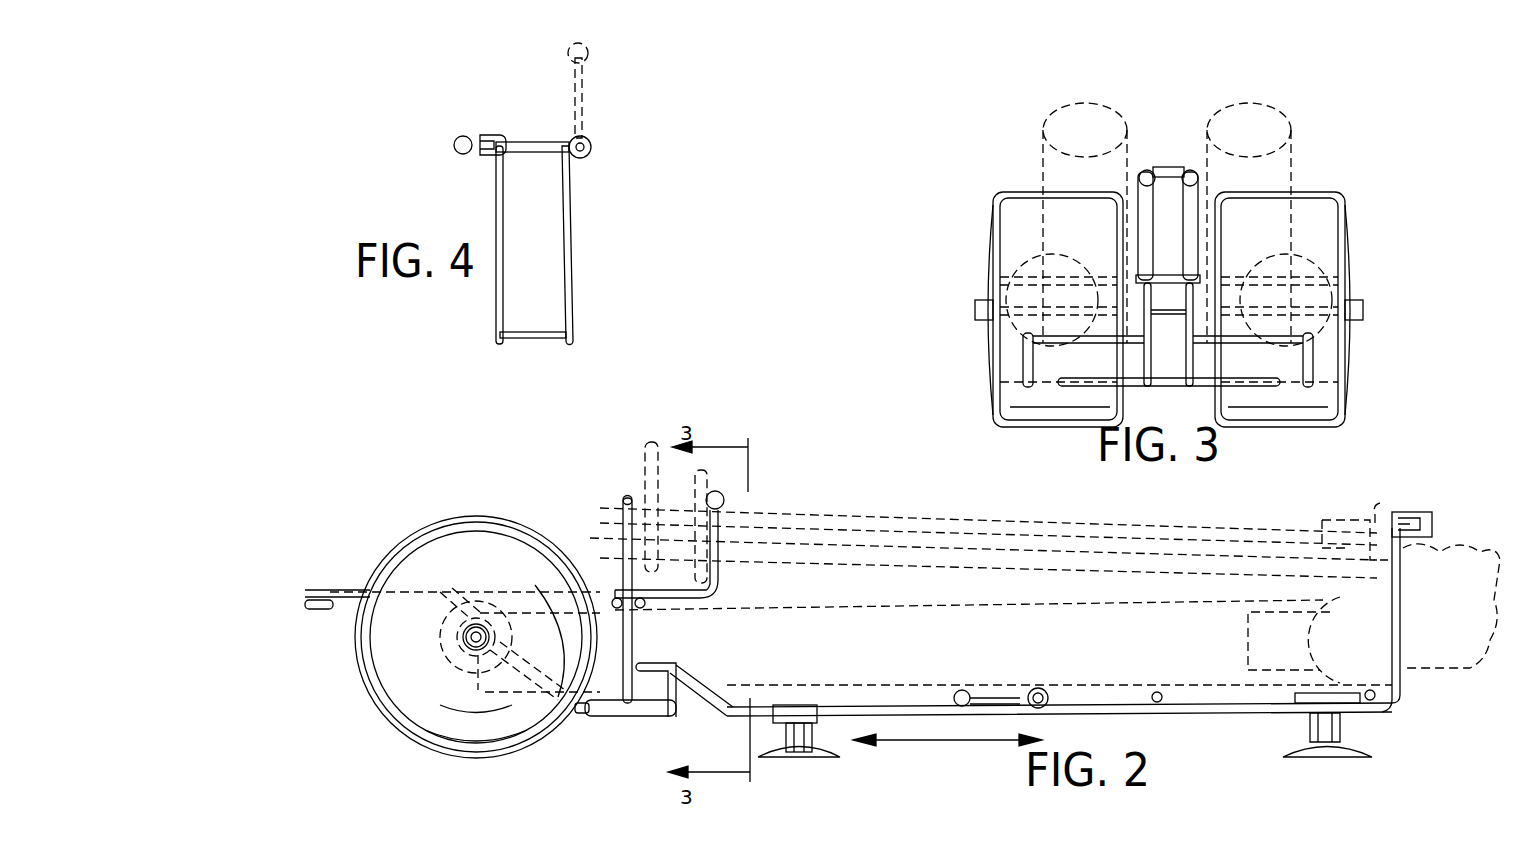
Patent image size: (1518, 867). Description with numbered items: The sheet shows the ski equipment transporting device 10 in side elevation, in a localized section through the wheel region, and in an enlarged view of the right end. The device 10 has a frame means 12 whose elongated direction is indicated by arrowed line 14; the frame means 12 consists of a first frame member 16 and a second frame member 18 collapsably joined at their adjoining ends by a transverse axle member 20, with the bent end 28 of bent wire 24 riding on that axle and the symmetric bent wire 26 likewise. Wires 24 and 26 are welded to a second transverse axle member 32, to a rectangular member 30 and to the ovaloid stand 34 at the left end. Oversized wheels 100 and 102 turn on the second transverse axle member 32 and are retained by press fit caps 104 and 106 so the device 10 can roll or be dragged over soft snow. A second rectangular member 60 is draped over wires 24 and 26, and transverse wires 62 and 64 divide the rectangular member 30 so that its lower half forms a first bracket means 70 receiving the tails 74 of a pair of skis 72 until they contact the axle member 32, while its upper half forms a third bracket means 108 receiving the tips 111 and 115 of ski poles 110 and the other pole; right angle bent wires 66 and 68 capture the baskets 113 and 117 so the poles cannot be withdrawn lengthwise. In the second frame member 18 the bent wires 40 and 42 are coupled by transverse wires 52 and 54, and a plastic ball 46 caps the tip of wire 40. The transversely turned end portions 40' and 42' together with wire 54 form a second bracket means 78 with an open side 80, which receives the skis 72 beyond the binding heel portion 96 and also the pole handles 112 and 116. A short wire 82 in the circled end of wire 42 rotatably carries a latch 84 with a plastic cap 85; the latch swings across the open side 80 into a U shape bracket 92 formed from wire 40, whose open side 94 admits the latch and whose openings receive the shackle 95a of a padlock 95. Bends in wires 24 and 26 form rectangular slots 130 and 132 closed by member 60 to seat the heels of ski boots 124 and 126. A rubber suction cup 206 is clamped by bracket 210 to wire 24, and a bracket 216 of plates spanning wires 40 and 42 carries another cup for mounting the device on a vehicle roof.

In FIG. 2, the device for transporting ski equipment 10 is at (474, 486).
In FIG. 2, the frame means 12 is at (1038, 686).
In FIG. 2, the arrowed line 14 is at (940, 742).
In FIG. 2, the first frame member 16 is at (862, 706).
In FIG. 2, the second frame member 18 is at (1220, 716).
In FIG. 2, the transverse axle member 20 is at (1030, 690).
In FIG. 3, the bent wire 24 is at (1072, 352).
In FIG. 2, the bent wire 24 is at (718, 715).
In FIG. 3, the bent wire 26 is at (1266, 352).
In FIG. 2, the bent end 28 is at (1046, 706).
In FIG. 3, the rectangular member 30 is at (1152, 166).
In FIG. 2, the rectangular member 30 is at (623, 500).
In FIG. 3, the second transverse axle member 32 is at (990, 285).
In FIG. 3, the stand 34 is at (990, 262).
In FIG. 2, the stand 34 is at (318, 610).
In FIG. 4, the bent wire 40 is at (472, 365).
In FIG. 2, the bent wire 40 is at (1428, 703).
In FIG. 4, the transversely turned end portion 40' is at (475, 245).
In FIG. 4, the bent wire 42 is at (583, 365).
In FIG. 4, the transversely turned end portion 42' is at (596, 245).
In FIG. 2, the plastic ball 46 is at (958, 690).
In FIG. 2, the wire 52 is at (1162, 695).
In FIG. 4, the wire 54 is at (530, 331).
In FIG. 2, the wire 54 is at (1370, 690).
In FIG. 3, the second rectangular member 60 is at (1140, 386).
In FIG. 2, the second rectangular member 60 is at (592, 716).
In FIG. 2, the wire 62 is at (615, 598).
In FIG. 2, the wire 64 is at (642, 609).
In FIG. 3, the right angle bent wire 66 is at (1136, 205).
In FIG. 2, the right angle bent wire 66 is at (722, 592).
In FIG. 3, the right angle bent wire 68 is at (1200, 205).
In FIG. 3, the first bracket means 70 is at (1168, 326).
In FIG. 2, the first bracket means 70 is at (640, 654).
In FIG. 2, the pair of skis 72 is at (858, 606).
In FIG. 2, the tails 74 is at (478, 688).
In FIG. 4, the second bracket means 78 is at (493, 287).
In FIG. 2, the second bracket means 78 is at (1402, 641).
In FIG. 4, the open side 80 is at (538, 140).
In FIG. 4, the short wire 82 is at (590, 139).
In FIG. 4, the latch 84 is at (504, 140).
In FIG. 4, the plastic cap 85 is at (454, 145).
In FIG. 4, the U shape bracket 92 is at (475, 135).
In FIG. 2, the U shape bracket 92 is at (1433, 505).
In FIG. 2, the open side 94 is at (1395, 508).
In FIG. 2, the padlock 95 is at (1365, 525).
In FIG. 2, the shackle 95a is at (1385, 500).
In FIG. 2, the heel portion of the bindings 96 is at (1248, 625).
In FIG. 3, the wheel 100 is at (1015, 195).
In FIG. 2, the wheel 100 is at (397, 560).
In FIG. 3, the wheel 102 is at (1300, 195).
In FIG. 3, the press fit cap 104 is at (975, 310).
In FIG. 2, the press fit cap 104 is at (464, 643).
In FIG. 3, the press fit cap 106 is at (1365, 302).
In FIG. 3, the third bracket means 108 is at (1168, 248).
In FIG. 2, the third bracket means 108 is at (622, 532).
In FIG. 2, the ski pole 110 is at (832, 512).
In FIG. 2, the tip 111 is at (600, 508).
In FIG. 2, the handle 112 is at (930, 512).
In FIG. 2, the basket 113 is at (648, 458).
In FIG. 2, the tip 115 is at (620, 542).
In FIG. 2, the handle 116 is at (1452, 595).
In FIG. 2, the basket 117 is at (705, 476).
In FIG. 3, the ski boot 124 is at (1093, 103).
In FIG. 3, the ski boot 126 is at (1262, 103).
In FIG. 3, the rectangular slot 130 is at (1022, 380).
In FIG. 3, the rectangular slot 132 is at (1314, 380).
In FIG. 2, the rubber suction cup 206 is at (838, 750).
In FIG. 2, the clamping bracket 210 is at (792, 706).
In FIG. 2, the bracket 216 is at (1292, 693).